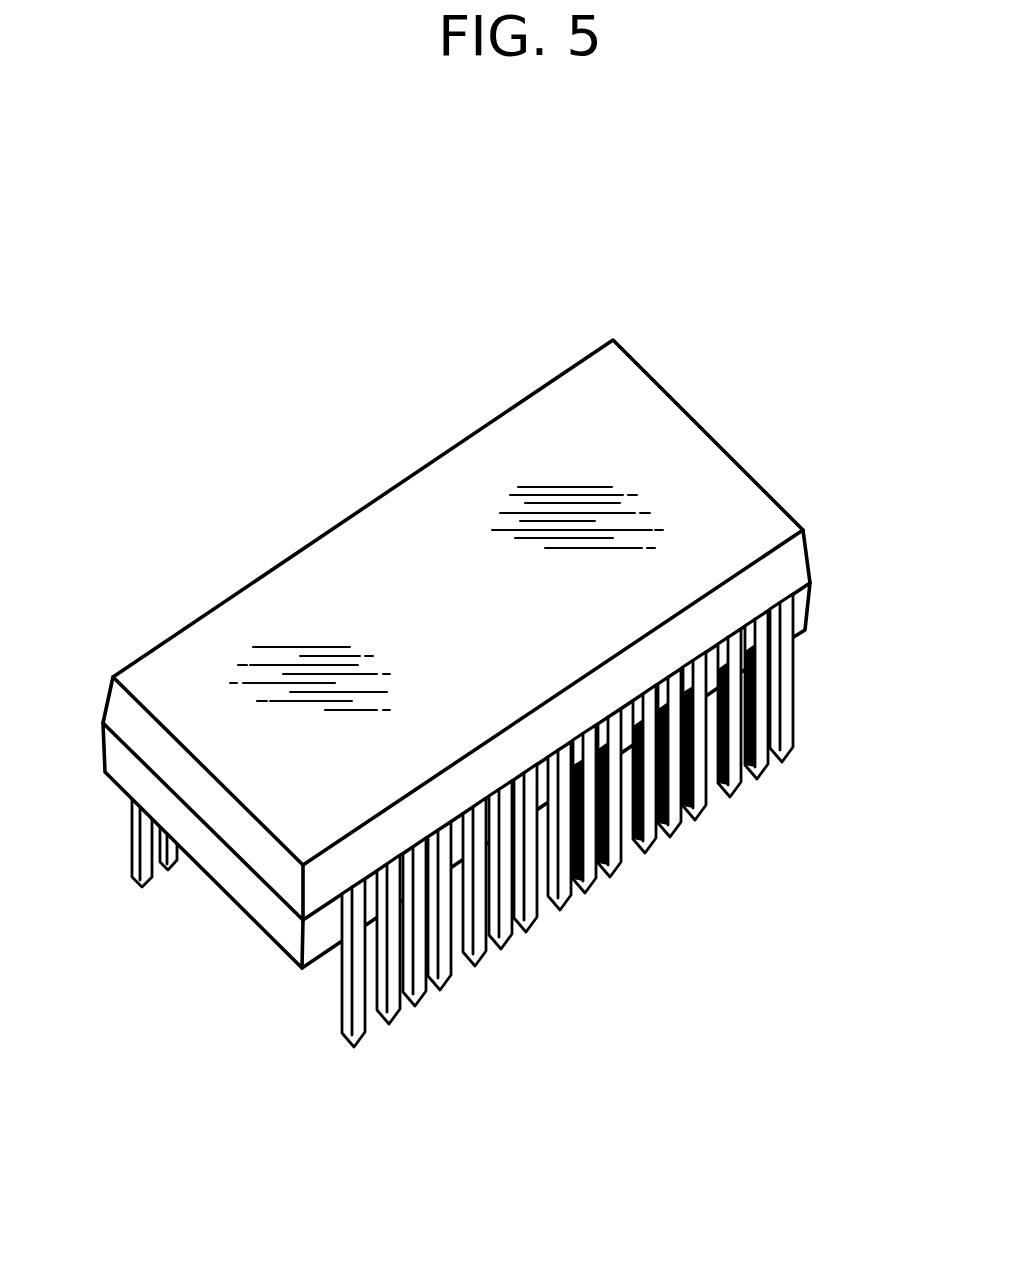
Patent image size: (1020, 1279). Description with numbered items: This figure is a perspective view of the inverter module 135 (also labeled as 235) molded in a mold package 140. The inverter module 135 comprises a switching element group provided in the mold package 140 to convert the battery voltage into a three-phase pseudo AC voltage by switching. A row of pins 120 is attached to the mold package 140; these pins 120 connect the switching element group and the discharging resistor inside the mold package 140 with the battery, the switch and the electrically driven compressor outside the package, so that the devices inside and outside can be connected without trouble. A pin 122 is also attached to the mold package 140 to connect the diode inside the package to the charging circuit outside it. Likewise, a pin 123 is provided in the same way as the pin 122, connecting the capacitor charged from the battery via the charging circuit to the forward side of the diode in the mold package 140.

The inverter module 135 is at (596, 307).
The connector 235 is at (477, 703).
The mold package 140 is at (712, 462).
The pins 120 is at (675, 820).
The pin 122 is at (139, 890).
The pin 123 is at (154, 843).